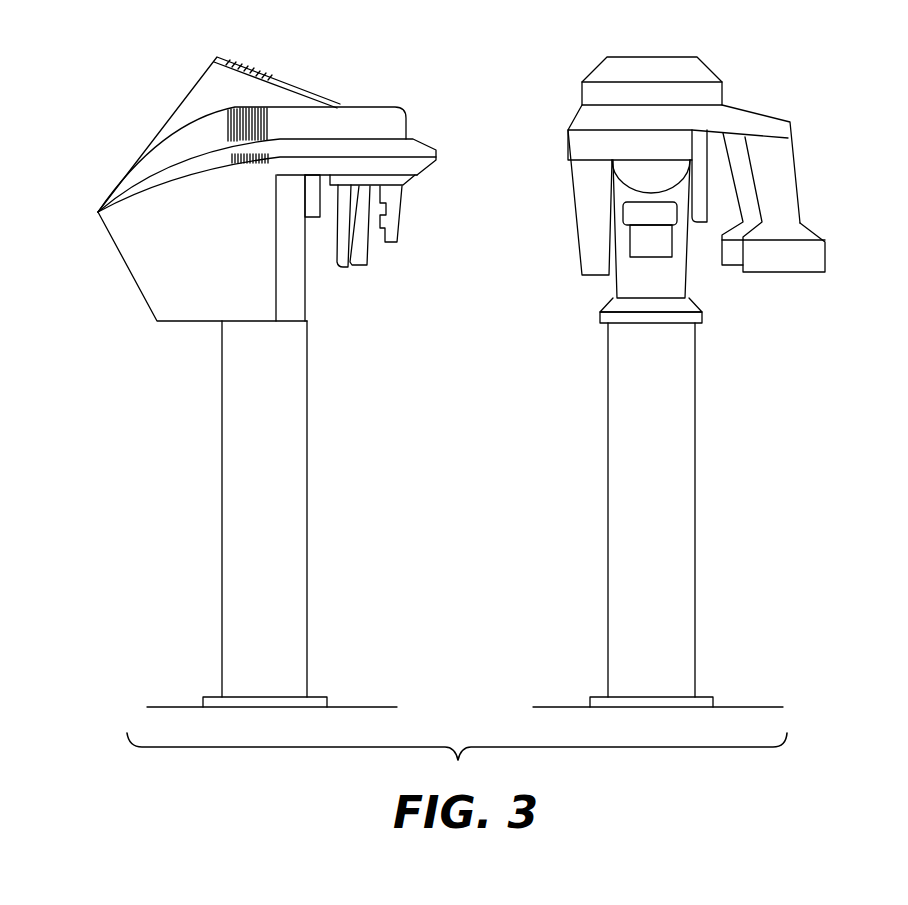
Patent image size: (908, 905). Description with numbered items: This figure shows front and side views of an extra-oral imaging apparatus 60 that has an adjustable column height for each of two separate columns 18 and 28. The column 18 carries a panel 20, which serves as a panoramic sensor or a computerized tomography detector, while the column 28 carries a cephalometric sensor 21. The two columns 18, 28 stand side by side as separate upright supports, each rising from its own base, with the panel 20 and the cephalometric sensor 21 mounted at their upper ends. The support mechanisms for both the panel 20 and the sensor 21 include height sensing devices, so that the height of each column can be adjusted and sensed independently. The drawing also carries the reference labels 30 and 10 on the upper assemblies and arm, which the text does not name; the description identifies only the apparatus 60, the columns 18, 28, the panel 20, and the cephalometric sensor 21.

The support arm 10 is at (787, 193).
The column 18 is at (680, 553).
The panel 20 is at (592, 276).
The cephalometric sensor 21 is at (293, 203).
The column 28 is at (233, 565).
The head assembly 30 is at (66, 222).
The extra-oral imaging apparatus 60 is at (122, 65).